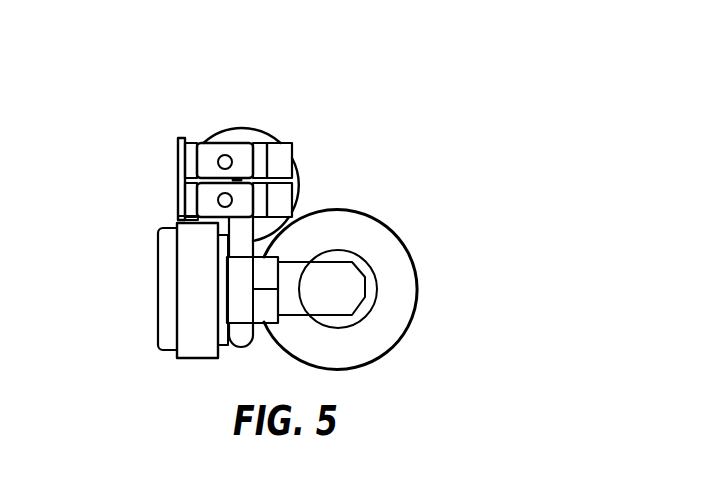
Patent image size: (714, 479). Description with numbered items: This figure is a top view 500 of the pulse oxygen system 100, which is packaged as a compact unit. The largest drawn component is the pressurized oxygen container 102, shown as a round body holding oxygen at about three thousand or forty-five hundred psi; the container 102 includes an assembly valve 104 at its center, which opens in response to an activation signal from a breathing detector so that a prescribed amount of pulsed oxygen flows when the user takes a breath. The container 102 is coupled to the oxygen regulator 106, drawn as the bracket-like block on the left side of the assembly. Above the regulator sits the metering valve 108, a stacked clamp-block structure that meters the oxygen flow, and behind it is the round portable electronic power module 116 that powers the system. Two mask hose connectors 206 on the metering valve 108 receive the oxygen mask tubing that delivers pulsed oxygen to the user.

The pulse oxygen system 100 is at (472, 274).
The pressurized oxygen container 102 is at (297, 185).
The assembly valve 104 is at (352, 287).
The oxygen regulator 106 is at (165, 295).
The metering valve 108 is at (290, 148).
The portable electronic power module 116 is at (240, 128).
The mask hose connector 206 is at (218, 161).
The top view 500 is at (493, 99).